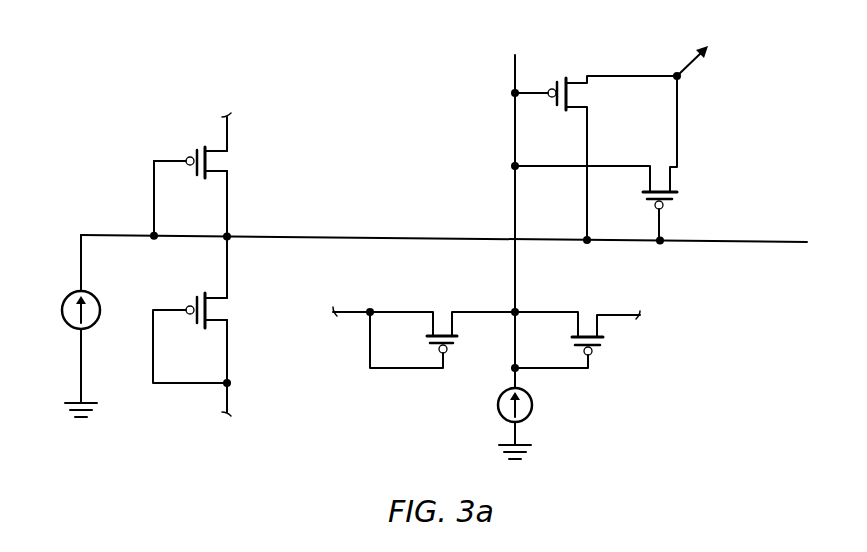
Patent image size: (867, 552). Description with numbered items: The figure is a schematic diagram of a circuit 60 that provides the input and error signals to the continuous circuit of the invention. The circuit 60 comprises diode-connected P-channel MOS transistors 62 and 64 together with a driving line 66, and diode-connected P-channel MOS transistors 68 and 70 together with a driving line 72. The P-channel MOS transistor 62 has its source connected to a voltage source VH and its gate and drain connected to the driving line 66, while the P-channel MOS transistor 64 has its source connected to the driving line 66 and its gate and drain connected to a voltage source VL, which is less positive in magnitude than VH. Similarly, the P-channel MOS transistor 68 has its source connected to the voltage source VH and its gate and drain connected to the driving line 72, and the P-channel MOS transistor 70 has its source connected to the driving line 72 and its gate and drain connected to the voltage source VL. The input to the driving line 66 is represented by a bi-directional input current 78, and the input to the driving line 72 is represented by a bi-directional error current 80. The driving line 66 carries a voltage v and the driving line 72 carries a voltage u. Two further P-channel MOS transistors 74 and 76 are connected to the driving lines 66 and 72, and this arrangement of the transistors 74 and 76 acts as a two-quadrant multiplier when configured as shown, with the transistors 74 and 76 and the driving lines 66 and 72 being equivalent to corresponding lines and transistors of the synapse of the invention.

The circuit 60 is at (429, 243).
The P-channel MOS transistor 62 is at (203, 146).
The P-channel MOS transistor 64 is at (203, 293).
The driving line 66 is at (312, 236).
The P-channel MOS transistor 68 is at (603, 338).
The P-channel MOS transistor 70 is at (458, 338).
The driving line 72 is at (517, 283).
The P-channel MOS transistor 74 is at (566, 76).
The P-channel MOS transistor 76 is at (674, 182).
The bi-directional current Iin 78 is at (94, 326).
The bi-directional current Ier 80 is at (500, 415).